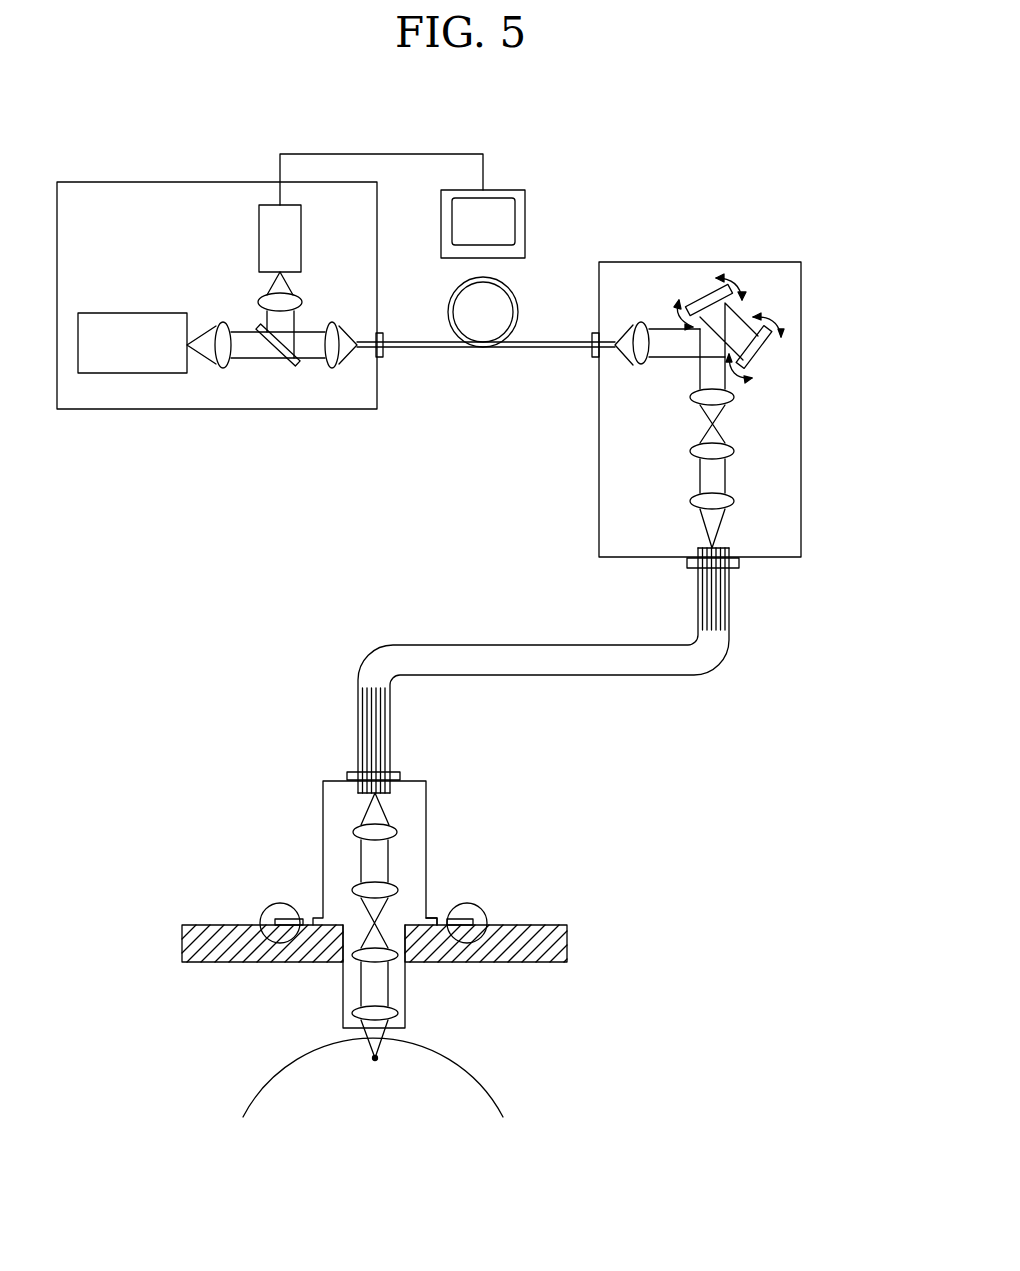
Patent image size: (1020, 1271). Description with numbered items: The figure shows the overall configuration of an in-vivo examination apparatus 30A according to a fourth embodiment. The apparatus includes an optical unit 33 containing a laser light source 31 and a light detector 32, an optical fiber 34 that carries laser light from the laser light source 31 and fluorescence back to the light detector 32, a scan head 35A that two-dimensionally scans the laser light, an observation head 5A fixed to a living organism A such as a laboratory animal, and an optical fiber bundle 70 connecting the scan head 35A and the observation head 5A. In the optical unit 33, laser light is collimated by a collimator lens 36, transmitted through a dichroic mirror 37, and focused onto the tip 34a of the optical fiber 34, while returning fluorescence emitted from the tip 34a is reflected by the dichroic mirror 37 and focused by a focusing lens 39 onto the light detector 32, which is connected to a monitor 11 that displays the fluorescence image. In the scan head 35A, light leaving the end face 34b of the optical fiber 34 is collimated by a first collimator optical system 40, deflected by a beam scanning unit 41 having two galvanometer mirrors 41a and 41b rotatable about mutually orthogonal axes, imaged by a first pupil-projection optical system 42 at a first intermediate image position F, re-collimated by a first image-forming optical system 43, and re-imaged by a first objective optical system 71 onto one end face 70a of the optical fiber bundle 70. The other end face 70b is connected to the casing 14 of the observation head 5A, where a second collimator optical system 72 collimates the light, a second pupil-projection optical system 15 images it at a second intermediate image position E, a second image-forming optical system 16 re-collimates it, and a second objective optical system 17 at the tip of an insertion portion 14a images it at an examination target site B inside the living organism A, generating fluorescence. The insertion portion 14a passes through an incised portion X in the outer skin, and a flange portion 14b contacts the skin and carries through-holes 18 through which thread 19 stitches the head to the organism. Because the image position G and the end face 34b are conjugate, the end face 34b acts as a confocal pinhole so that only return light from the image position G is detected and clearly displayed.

The monitor 11 is at (525, 210).
The laser light source 31 is at (128, 313).
The light detector 32 is at (259, 210).
The optical unit 33 is at (283, 409).
The optical fiber 34 is at (433, 349).
The tip of the optical fiber 34a is at (330, 368).
The end face of the optical fiber 34b is at (613, 352).
The scan head 35A is at (801, 432).
The collimator lens 36 is at (218, 322).
The dichroic mirror 37 is at (290, 362).
The focusing lens 39 is at (258, 300).
The first collimator optical system 40 is at (641, 322).
The beam scanning unit 41 is at (782, 303).
The galvanometer mirror 41a is at (768, 331).
The galvanometer mirror 41b is at (703, 290).
The first pupil-projection optical system 42 is at (735, 397).
The first image-forming optical system 43 is at (735, 452).
The first objective optical system 71 is at (735, 504).
The optical fiber bundle 70 is at (596, 669).
The one end face of the optical fiber bundle 70a is at (724, 548).
The another end face of the optical fiber bundle 70b is at (397, 803).
The second collimator optical system 72 is at (353, 828).
The observation head 5A is at (377, 896).
The casing 14 is at (383, 916).
The insertion portion 14a is at (340, 1012).
The flange portion 14b is at (434, 917).
The second pupil-projection optical system 15 is at (352, 886).
The second image-forming optical system 16 is at (398, 957).
The second objective optical system 17 is at (398, 1014).
The through-holes 18 is at (302, 918).
The thread 19 is at (262, 916).
The in-vivo examination apparatus 30A is at (754, 790).
The living organism A is at (556, 925).
The examination target site B is at (490, 1095).
The second intermediate image position E is at (398, 908).
The first intermediate image position F is at (690, 428).
The image position G is at (378, 1060).
The incised portion X is at (343, 962).